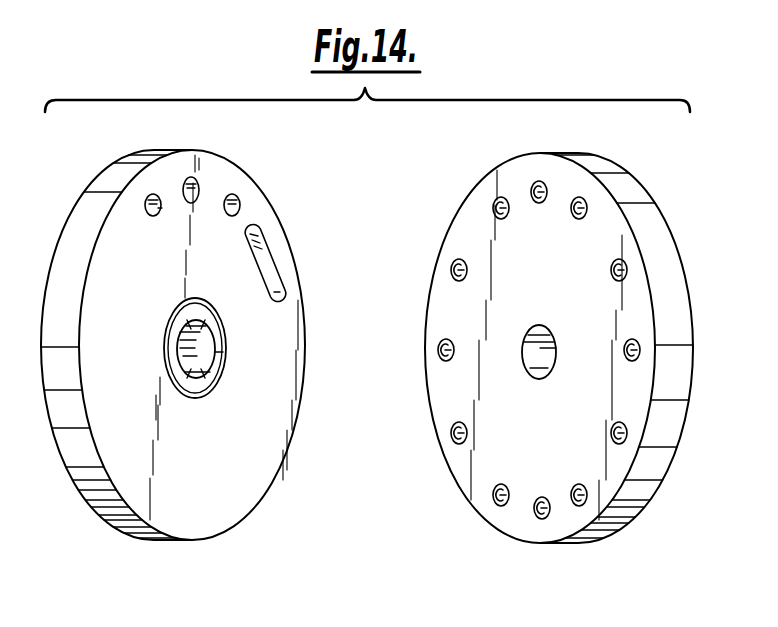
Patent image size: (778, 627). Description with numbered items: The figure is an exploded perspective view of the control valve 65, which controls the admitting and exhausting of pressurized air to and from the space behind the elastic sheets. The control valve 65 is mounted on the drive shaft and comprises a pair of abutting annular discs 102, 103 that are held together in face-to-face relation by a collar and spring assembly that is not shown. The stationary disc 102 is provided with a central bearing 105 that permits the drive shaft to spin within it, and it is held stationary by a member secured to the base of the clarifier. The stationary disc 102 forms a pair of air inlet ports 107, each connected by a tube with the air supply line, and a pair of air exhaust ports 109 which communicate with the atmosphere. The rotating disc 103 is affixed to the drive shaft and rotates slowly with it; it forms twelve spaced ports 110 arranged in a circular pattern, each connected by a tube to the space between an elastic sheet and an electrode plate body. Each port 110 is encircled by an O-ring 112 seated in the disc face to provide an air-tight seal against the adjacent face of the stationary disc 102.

The control valve 65 is at (297, 594).
The stationary disc 102 is at (255, 476).
The rotating disc 103 is at (498, 455).
The central bearing 105 is at (222, 352).
The air inlet ports 107 is at (156, 217).
The air exhaust ports 109 is at (198, 187).
The ports 110 is at (534, 190).
The O-ring 112 is at (576, 212).